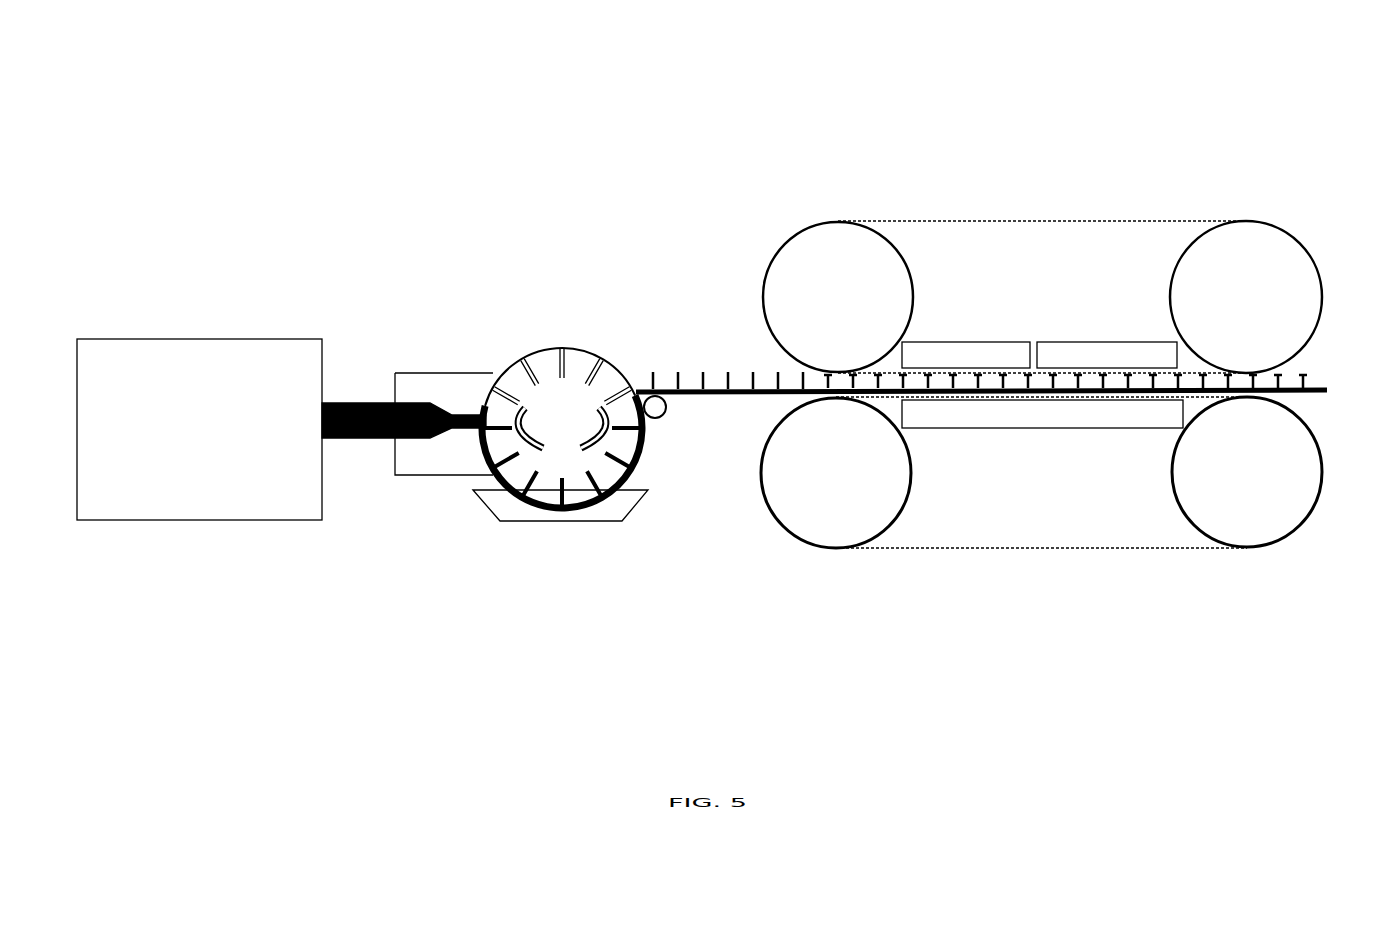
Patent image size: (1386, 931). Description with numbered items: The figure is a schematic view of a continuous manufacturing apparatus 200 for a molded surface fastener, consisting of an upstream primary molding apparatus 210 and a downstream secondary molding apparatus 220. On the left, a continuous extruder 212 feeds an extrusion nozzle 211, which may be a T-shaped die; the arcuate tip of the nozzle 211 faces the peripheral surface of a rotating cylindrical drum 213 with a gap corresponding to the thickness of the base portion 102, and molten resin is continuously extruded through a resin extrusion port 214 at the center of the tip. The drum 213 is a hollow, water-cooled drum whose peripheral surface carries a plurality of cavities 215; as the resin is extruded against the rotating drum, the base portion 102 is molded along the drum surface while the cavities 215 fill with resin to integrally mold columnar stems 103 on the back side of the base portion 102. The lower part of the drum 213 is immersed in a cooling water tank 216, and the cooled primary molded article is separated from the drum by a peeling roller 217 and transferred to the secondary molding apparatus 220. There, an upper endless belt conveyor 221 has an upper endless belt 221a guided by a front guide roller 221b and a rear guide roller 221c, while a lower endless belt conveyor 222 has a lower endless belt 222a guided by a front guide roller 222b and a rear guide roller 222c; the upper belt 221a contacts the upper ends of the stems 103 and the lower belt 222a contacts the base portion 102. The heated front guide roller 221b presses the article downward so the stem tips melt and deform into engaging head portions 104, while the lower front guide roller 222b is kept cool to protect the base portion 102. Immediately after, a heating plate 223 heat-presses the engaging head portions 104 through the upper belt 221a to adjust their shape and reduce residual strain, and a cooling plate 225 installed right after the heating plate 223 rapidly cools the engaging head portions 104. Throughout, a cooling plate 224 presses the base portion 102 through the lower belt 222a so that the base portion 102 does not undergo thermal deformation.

The continuous manufacturing apparatus 200 is at (168, 113).
The primary molding apparatus 210 is at (460, 275).
The extrusion nozzle 211 is at (392, 478).
The continuous extruder 212 is at (265, 338).
The cylindrical drum 213 is at (575, 346).
The resin extrusion port 214 is at (465, 440).
The cavities 215 is at (612, 365).
The cooling water tank 216 is at (598, 524).
The peeling roller 217 is at (658, 420).
The base portion 102 is at (748, 396).
The stems 103 is at (680, 372).
The engaging head portions 104 is at (1305, 375).
The secondary molding apparatus 220 is at (1057, 130).
The upper endless belt conveyor 221 is at (998, 205).
The upper endless belt 221a is at (1100, 220).
The front guide roller 221b is at (838, 297).
The rear guide roller 221c is at (1246, 297).
The lower endless belt conveyor 222 is at (997, 562).
The lower endless belt 222a is at (1092, 550).
The front guide roller 222b is at (836, 473).
The rear guide roller 222c is at (1247, 472).
The heating plate 223 is at (966, 355).
The cooling plate 224 is at (1042, 414).
The cooling plate 225 is at (1107, 355).